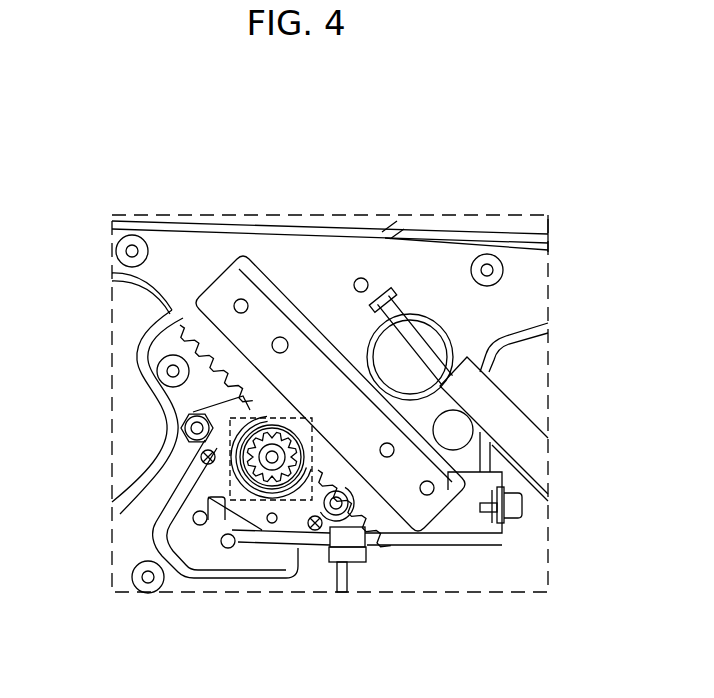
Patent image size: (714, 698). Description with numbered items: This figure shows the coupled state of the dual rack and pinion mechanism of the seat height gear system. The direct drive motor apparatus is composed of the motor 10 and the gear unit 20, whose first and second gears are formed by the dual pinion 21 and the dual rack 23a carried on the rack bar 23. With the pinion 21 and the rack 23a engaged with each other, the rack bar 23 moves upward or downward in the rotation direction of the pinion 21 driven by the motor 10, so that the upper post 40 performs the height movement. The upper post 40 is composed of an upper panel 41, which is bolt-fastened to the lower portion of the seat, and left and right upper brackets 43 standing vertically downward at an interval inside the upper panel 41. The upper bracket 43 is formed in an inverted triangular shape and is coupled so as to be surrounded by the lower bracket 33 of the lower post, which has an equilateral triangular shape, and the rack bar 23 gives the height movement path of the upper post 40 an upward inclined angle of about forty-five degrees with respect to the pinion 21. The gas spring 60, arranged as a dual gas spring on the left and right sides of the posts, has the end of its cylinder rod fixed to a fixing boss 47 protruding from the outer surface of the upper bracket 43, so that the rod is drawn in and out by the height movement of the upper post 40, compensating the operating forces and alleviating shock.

The motor 10 is at (481, 533).
The gear unit 20 is at (205, 468).
The pinion 21 is at (272, 465).
The rack bar 23 is at (416, 516).
The rack 23a is at (328, 510).
The lower bracket 33 is at (130, 358).
The upper post 40 is at (330, 171).
The upper panel 41 is at (510, 225).
The upper bracket 43 is at (430, 270).
The fixing boss 47 is at (381, 300).
The gas spring 60 is at (500, 408).